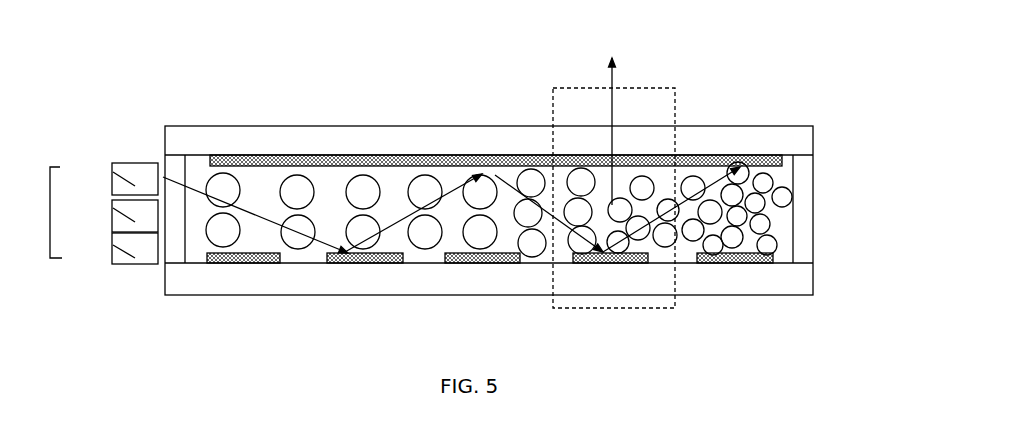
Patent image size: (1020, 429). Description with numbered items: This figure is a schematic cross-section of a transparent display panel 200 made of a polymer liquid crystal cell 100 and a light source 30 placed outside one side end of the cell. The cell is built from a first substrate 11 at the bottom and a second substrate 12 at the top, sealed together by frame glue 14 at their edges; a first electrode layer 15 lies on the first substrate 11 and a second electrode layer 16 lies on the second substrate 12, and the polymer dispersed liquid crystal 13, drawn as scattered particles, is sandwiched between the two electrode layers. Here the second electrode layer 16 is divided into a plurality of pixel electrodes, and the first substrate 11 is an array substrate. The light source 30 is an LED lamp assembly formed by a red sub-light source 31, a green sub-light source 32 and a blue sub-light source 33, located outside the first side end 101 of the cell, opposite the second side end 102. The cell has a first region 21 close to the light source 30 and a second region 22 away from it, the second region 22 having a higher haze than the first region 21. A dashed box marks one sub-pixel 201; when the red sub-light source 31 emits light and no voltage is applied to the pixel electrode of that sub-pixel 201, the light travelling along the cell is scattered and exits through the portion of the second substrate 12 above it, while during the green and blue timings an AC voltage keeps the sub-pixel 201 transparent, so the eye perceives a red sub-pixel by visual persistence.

The display panel 200 is at (921, 59).
The polymer liquid crystal cell 100 is at (795, 140).
The first substrate 11 is at (795, 287).
The second substrate 12 is at (795, 143).
The polymer dispersed liquid crystal 13 is at (760, 223).
The frame glue 14 is at (805, 183).
The first electrode layer 15 is at (367, 163).
The second electrode layer 16 is at (245, 257).
The first region 21 is at (196, 173).
The second region 22 is at (780, 177).
The first side end 101 is at (192, 240).
The second side end 102 is at (793, 228).
The sub-pixel 201 is at (553, 88).
The light source 30 is at (48, 212).
The red sub-light source 31 is at (112, 177).
The green sub-light source 32 is at (112, 214).
The blue sub-light source 33 is at (112, 250).